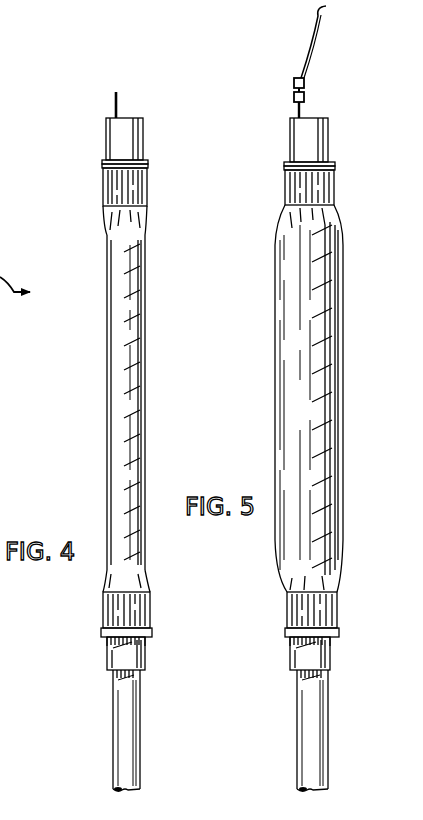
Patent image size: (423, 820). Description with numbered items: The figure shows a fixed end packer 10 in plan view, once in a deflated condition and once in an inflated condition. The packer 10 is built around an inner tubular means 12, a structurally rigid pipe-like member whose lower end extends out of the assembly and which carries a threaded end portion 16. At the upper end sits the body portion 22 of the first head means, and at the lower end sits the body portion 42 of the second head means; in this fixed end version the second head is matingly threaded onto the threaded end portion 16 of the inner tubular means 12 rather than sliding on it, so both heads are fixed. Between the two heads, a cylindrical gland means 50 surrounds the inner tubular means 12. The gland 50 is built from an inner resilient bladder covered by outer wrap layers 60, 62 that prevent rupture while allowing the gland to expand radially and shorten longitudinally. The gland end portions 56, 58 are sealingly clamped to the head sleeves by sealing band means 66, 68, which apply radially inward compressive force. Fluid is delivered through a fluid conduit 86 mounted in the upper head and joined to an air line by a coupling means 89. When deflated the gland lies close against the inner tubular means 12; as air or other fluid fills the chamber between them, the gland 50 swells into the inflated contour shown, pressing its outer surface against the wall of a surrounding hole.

In FIG. 5, the packer 10 is at (386, 300).
In FIG. 4, the inner tubular means 12 is at (140, 706).
In FIG. 5, the inner tubular means 12 is at (328, 700).
In FIG. 4, the threaded end portion 16 is at (70, 218).
In FIG. 4, the body portion 22 is at (145, 140).
In FIG. 5, the body portion 22 is at (330, 126).
In FIG. 4, the body portion of second head means 42 is at (107, 658).
In FIG. 5, the body portion of second head means 42 is at (292, 645).
In FIG. 4, the gland means 50 is at (146, 383).
In FIG. 5, the gland means 50 is at (344, 385).
In FIG. 4, the gland end portion 56 is at (148, 165).
In FIG. 5, the gland end portion 56 is at (336, 168).
In FIG. 4, the gland end portion 58 is at (151, 632).
In FIG. 5, the gland end portion 58 is at (338, 628).
In FIG. 4, the outer layer of gland 60 is at (148, 160).
In FIG. 5, the outer layer of gland 60 is at (335, 164).
In FIG. 4, the outer layer of gland 62 is at (148, 638).
In FIG. 5, the outer layer of gland 62 is at (337, 640).
In FIG. 4, the sealing band means 66 is at (148, 198).
In FIG. 5, the sealing band means 66 is at (336, 182).
In FIG. 4, the sealing band means 68 is at (103, 612).
In FIG. 5, the sealing band means 68 is at (338, 605).
In FIG. 4, the fluid conduit 86 is at (112, 111).
In FIG. 5, the fluid conduit 86 is at (304, 108).
In FIG. 5, the coupling means 89 is at (303, 92).